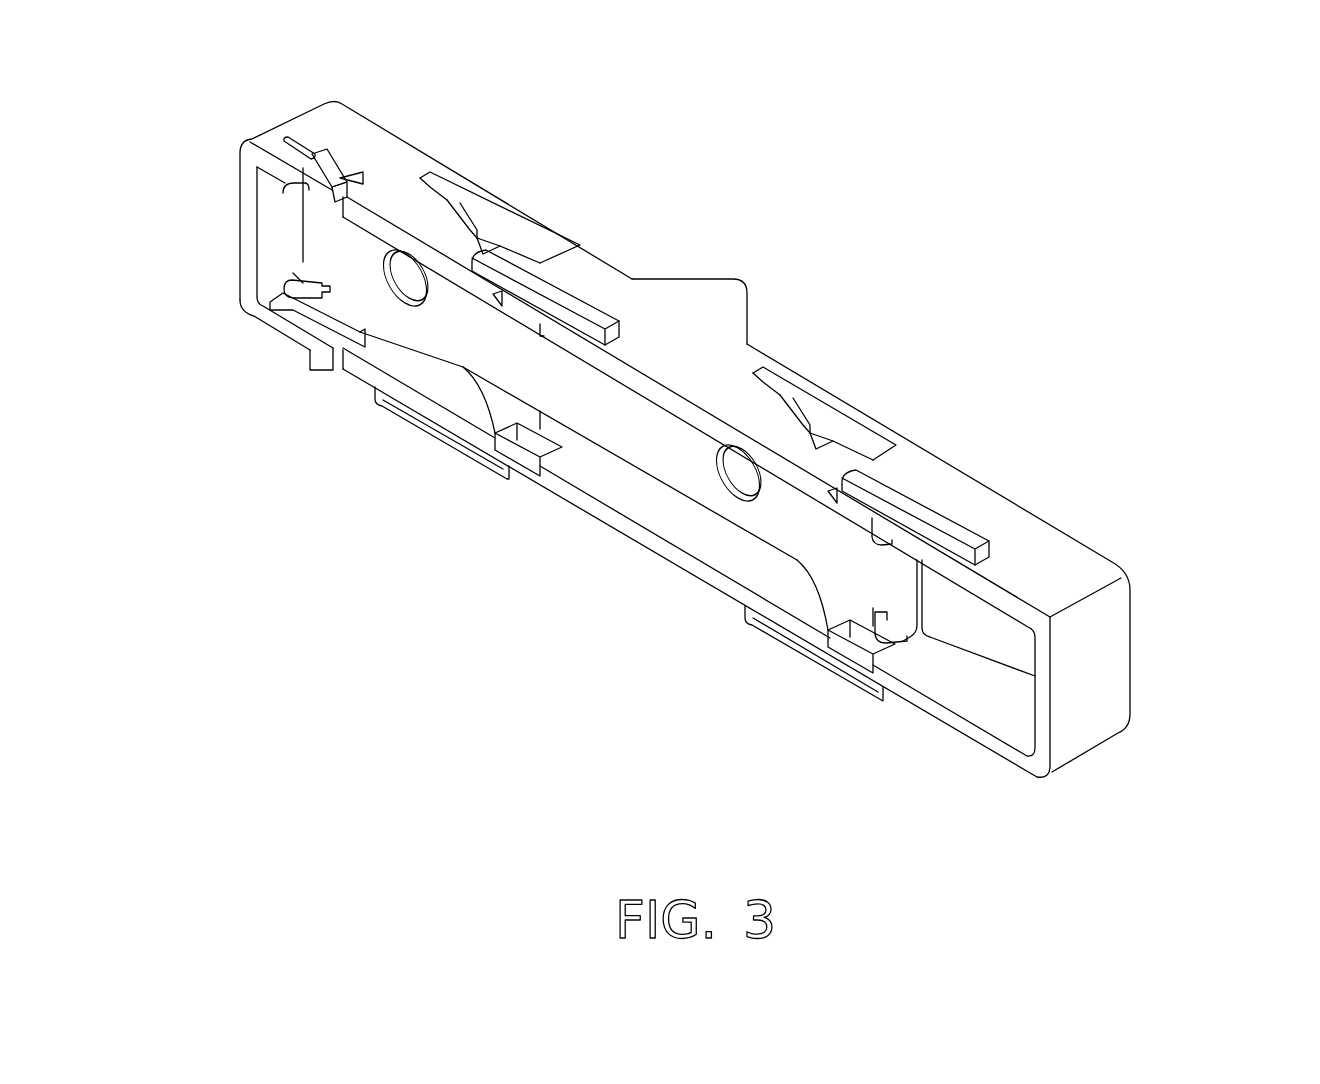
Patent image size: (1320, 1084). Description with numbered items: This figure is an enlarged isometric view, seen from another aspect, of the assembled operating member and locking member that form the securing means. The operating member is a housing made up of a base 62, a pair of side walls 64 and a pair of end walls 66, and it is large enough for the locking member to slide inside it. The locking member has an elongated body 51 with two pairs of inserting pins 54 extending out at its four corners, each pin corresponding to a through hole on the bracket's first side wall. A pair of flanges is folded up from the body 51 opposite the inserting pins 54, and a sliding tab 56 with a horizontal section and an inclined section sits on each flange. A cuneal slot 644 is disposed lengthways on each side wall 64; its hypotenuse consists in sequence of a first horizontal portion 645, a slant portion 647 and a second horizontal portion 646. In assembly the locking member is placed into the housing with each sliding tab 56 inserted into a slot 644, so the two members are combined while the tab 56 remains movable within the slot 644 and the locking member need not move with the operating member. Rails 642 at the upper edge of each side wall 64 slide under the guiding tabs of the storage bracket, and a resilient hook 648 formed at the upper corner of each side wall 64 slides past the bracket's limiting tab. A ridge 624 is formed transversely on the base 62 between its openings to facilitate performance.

The body 51 is at (670, 455).
The inserting pins 54 is at (290, 273).
The sliding tab 56 is at (447, 205).
The base 62 is at (1007, 623).
The side wall 64 is at (1040, 547).
The end wall 66 is at (1087, 660).
The ridge 624 is at (713, 297).
The rail 642 is at (900, 492).
The cuneal slot 644 is at (527, 247).
The first horizontal portion 645 is at (770, 373).
The second horizontal portion 646 is at (845, 452).
The slant portion 647 is at (822, 390).
The resilient hook 648 is at (337, 160).